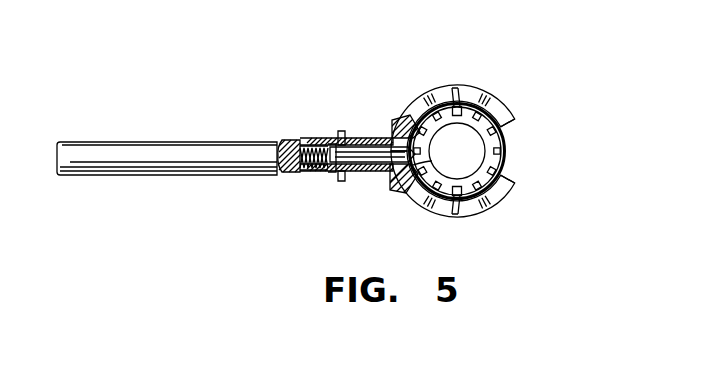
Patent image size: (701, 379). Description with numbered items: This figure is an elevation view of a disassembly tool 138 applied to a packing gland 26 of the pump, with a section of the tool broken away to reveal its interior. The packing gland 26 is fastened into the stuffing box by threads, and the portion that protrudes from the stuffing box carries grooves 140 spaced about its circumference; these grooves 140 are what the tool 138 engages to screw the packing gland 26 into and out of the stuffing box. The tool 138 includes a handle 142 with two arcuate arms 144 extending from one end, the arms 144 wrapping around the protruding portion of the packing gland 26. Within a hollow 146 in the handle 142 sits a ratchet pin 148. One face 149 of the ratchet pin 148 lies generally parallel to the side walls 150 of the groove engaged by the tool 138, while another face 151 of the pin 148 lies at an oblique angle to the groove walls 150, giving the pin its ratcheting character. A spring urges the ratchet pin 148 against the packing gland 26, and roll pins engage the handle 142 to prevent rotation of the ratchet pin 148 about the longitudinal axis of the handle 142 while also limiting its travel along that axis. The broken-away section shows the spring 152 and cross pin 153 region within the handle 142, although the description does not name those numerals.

The packing gland 26 is at (515, 133).
The tool 138 is at (331, 106).
The grooves 140 is at (506, 173).
The handle 142 is at (199, 155).
The arcuate arms 144 is at (492, 92).
The hollow 146 is at (305, 140).
The ratchet pin 148 is at (366, 157).
The face 149 is at (432, 161).
The side walls 150 is at (455, 88).
The face 151 is at (433, 142).
The spring 152 is at (306, 163).
The cross pin 153 is at (343, 181).